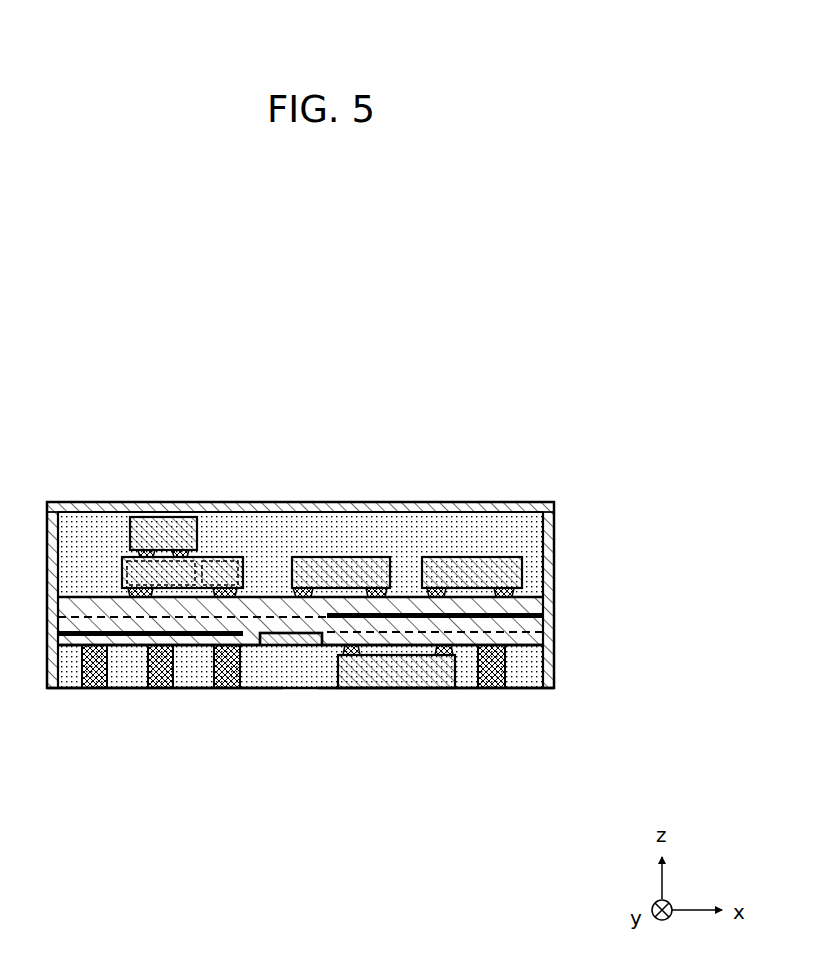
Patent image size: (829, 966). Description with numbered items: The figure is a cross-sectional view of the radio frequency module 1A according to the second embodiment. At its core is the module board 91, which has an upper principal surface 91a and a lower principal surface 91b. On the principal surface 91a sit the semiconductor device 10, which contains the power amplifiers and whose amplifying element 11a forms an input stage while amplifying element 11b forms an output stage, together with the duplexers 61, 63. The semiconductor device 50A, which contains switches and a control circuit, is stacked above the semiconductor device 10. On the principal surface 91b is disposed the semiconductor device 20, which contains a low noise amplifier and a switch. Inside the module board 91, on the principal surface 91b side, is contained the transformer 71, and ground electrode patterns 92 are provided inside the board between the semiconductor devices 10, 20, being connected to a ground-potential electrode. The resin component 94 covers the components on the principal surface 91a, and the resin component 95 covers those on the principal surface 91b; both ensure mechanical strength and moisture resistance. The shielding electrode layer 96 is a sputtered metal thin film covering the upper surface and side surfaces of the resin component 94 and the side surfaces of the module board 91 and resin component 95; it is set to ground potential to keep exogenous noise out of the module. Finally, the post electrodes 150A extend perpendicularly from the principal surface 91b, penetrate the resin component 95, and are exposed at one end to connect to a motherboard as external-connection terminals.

The radio frequency module 1A is at (519, 431).
The shielding electrode layer 96 is at (300, 506).
The resin component 94 is at (535, 527).
The module board 91 is at (537, 607).
The principal surface 91a is at (521, 616).
The principal surface 91b is at (532, 650).
The ground electrode patterns 92 is at (197, 637).
The resin component 95 is at (527, 668).
The transformer 71 is at (285, 646).
The post electrodes 150A is at (92, 689).
The semiconductor device 20 is at (388, 689).
The semiconductor device 50A is at (187, 503).
The semiconductor device 10 is at (122, 574).
The amplifying element 11a is at (122, 557).
The amplifying element 11b is at (232, 557).
The duplexer 61 is at (318, 557).
The duplexer 63 is at (450, 557).